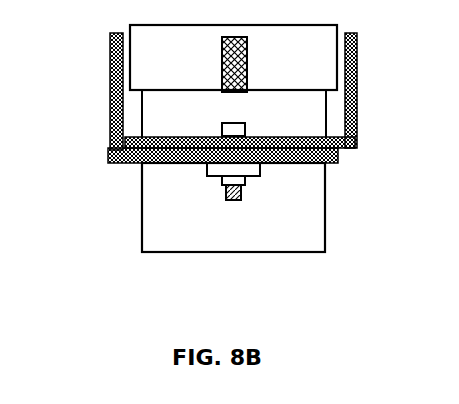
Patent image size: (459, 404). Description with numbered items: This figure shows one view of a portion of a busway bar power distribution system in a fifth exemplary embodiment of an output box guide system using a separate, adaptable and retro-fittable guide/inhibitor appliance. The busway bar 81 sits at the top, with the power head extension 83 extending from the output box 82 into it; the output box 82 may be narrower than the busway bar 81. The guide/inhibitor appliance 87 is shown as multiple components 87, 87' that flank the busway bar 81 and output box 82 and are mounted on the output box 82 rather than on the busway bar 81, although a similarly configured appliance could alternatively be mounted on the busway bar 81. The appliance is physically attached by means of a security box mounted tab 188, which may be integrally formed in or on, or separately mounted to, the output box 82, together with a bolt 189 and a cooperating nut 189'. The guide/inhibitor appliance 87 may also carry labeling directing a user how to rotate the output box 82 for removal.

The busway bar 81 is at (233, 57).
The output box 82 is at (158, 195).
The power head extension 83 is at (222, 53).
The guide/inhibitor appliance 87 is at (85, 110).
The guide/inhibitor appliance component 87' is at (378, 110).
The security box mounted tab 188 is at (239, 169).
The bolt 189 is at (268, 117).
The nut 189' is at (202, 207).